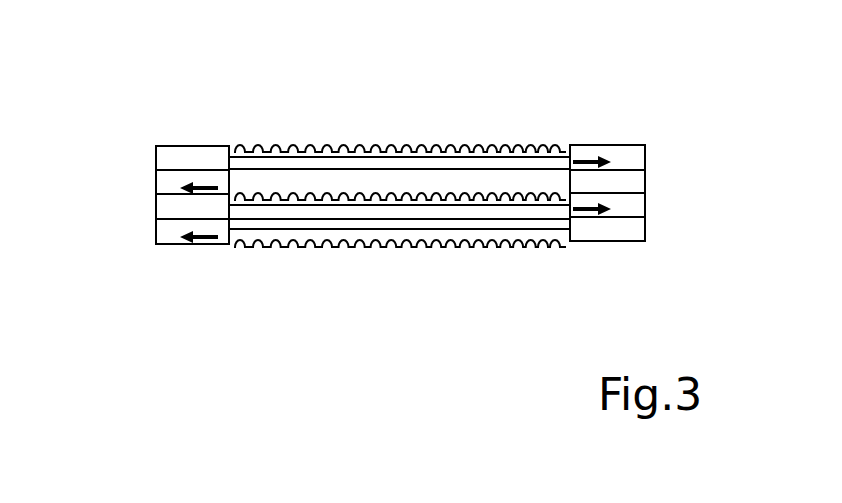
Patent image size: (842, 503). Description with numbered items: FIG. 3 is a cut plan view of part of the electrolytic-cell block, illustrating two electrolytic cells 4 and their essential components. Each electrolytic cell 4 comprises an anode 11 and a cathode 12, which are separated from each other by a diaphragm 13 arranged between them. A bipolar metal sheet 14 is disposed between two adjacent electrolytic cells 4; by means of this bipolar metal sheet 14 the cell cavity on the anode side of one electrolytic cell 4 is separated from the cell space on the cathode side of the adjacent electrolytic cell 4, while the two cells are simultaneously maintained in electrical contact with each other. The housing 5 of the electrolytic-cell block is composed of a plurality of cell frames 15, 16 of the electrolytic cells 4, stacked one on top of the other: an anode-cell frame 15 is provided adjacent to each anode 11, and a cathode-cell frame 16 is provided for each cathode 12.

The electrolytic cell 4 is at (628, 210).
The housing 5 is at (153, 162).
The anode 11 is at (238, 167).
The cathode 12 is at (568, 142).
The diaphragm 13 is at (410, 176).
The bipolar metal sheet 14 is at (331, 140).
The anode-cell frame 15 is at (168, 238).
The cathode-cell frame 16 is at (627, 155).